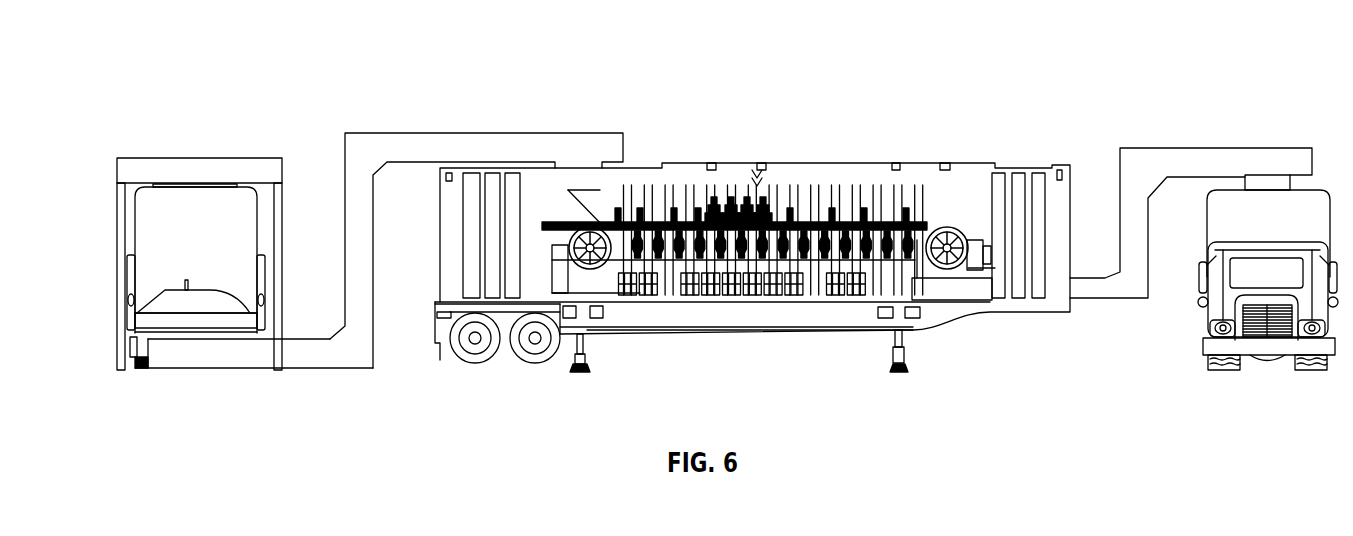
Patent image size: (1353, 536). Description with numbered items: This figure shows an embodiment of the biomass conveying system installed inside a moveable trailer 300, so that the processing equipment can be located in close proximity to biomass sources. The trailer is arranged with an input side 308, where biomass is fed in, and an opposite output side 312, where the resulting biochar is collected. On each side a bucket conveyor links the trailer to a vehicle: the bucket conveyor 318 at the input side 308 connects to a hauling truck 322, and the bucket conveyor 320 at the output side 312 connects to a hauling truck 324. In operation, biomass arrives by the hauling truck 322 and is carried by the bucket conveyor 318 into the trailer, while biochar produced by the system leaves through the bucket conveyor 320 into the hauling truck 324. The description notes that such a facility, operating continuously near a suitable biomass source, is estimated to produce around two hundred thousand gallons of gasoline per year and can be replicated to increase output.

The moveable trailer 300 is at (176, 78).
The input side 308 is at (530, 115).
The output side 312 is at (1196, 132).
The bucket conveyor 318 is at (372, 148).
The bucket conveyor 320 is at (1150, 163).
The hauling truck 322 is at (152, 308).
The hauling truck 324 is at (1270, 336).